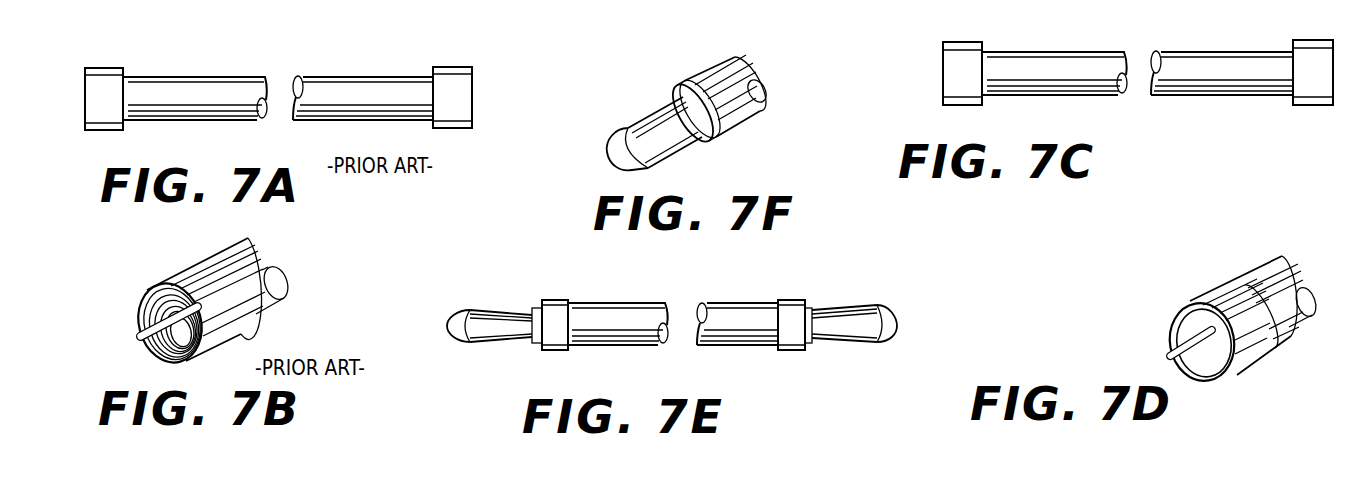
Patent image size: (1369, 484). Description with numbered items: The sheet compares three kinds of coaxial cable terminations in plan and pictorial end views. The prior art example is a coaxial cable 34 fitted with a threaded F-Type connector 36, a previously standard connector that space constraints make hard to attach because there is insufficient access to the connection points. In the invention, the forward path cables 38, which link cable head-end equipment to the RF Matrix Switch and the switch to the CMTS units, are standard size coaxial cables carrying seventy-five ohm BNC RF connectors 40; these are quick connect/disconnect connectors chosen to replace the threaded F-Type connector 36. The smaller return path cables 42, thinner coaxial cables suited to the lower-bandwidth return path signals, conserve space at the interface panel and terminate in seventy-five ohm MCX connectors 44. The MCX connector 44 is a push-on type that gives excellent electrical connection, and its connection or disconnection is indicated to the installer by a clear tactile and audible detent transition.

In FIG. 7A, the prior art coaxial cable assembly with threaded connectors 34 is at (222, 110).
In FIG. 7B, the threaded F-Type connector 36 is at (140, 297).
In FIG. 7C, the forward path cables 38 is at (1065, 88).
In FIG. 7D, the 75 ohm BNC RF connector 40 is at (1203, 296).
In FIG. 7E, the return path cables 42 is at (613, 340).
In FIG. 7F, the 75 ohm MCX connector 44 is at (643, 128).